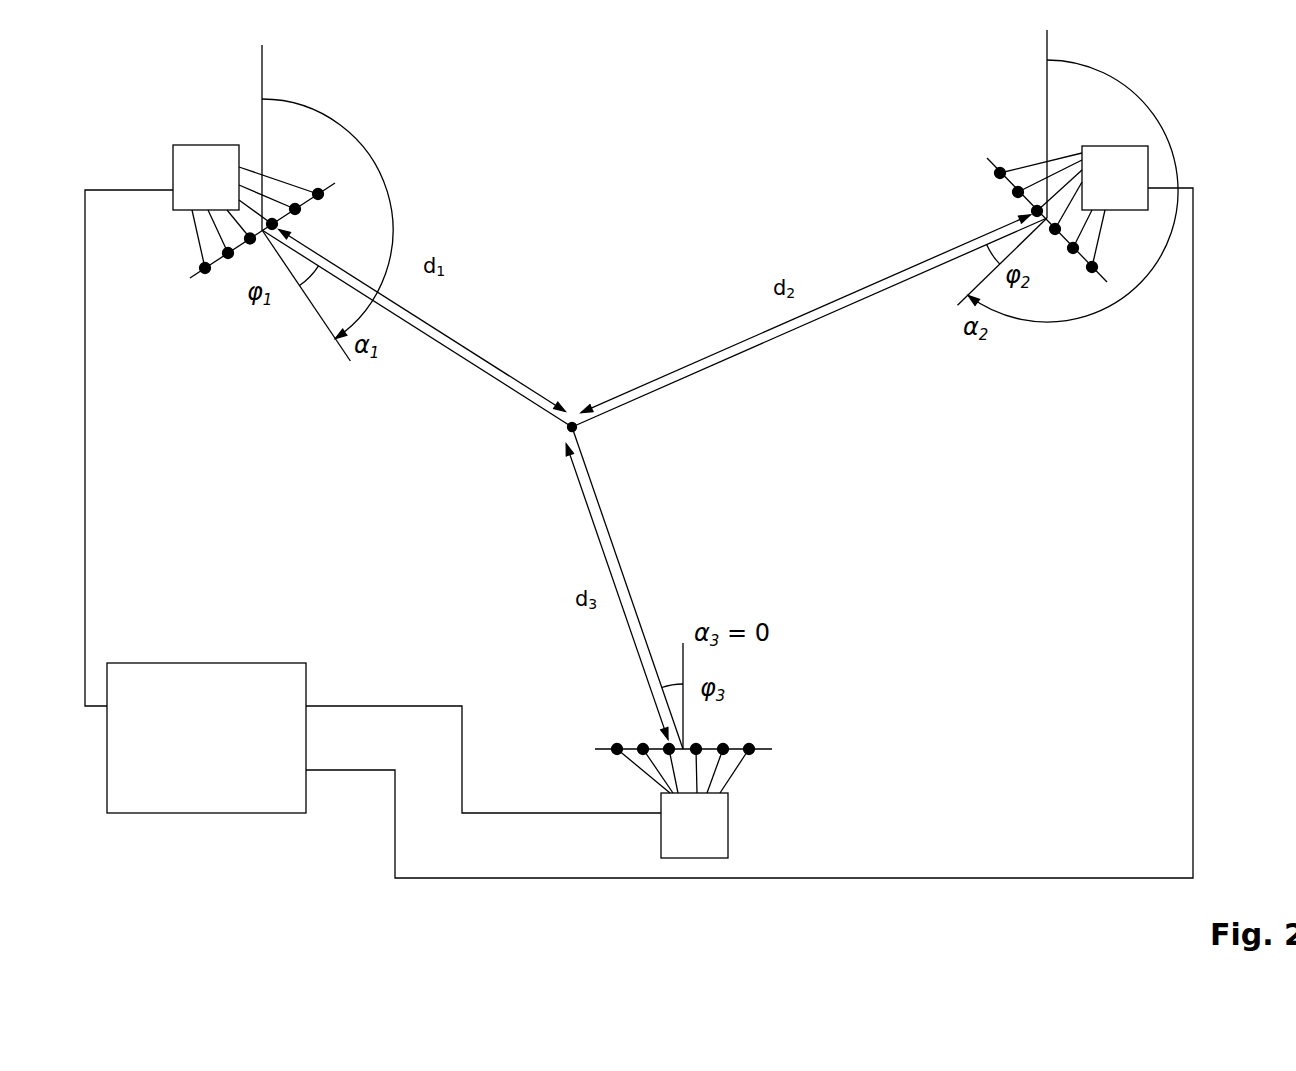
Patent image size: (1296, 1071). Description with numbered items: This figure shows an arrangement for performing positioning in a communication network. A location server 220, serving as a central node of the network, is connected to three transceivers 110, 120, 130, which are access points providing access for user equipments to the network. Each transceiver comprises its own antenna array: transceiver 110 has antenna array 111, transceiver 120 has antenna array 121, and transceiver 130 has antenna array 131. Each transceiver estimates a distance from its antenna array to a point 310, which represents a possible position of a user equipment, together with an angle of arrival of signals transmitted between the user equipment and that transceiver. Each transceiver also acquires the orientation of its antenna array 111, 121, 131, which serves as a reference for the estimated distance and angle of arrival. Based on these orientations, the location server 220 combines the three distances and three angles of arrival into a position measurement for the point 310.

The transceiver 110 is at (173, 168).
The antenna array 111 is at (198, 278).
The transceiver 120 is at (1117, 145).
The antenna array 121 is at (988, 158).
The transceiver 130 is at (730, 843).
The antenna array 131 is at (760, 747).
The location server 220 is at (308, 675).
The point 310 is at (563, 430).